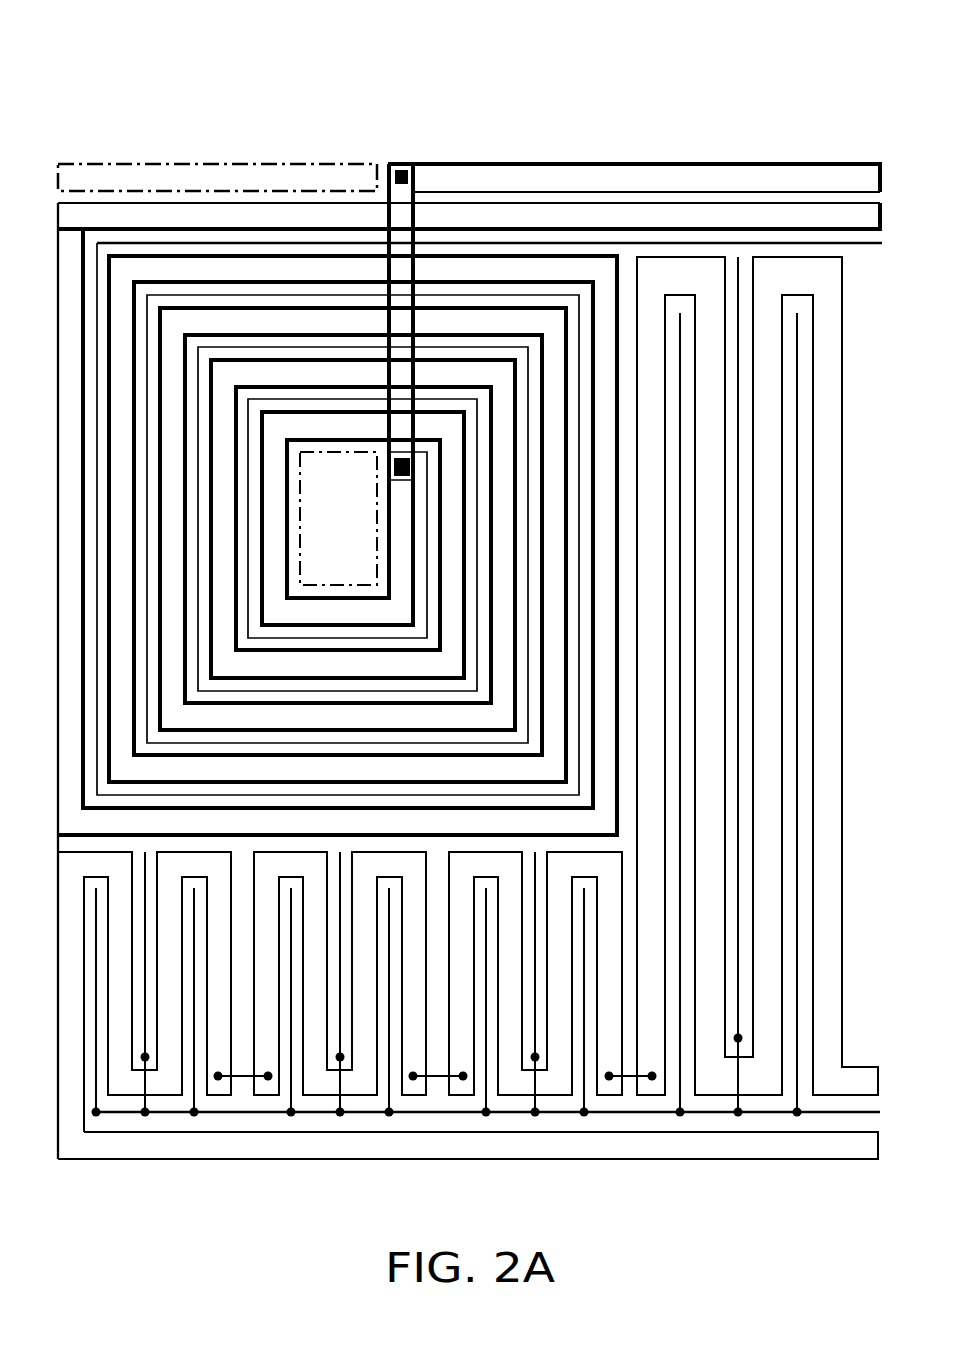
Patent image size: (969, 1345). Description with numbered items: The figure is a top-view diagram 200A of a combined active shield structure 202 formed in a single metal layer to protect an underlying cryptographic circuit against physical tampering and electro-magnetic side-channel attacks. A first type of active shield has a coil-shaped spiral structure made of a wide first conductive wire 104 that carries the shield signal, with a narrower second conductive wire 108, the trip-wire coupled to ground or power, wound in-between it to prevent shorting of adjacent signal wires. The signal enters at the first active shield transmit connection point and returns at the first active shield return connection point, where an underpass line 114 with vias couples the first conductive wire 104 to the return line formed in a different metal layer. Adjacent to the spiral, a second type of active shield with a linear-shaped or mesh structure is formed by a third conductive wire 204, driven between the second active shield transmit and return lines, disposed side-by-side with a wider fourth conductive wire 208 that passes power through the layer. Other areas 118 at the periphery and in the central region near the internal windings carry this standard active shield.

The top-view diagram 200A is at (82, 25).
The combined active shield structure 202 is at (697, 53).
The first conductive wire 104 is at (55, 346).
The second conductive wire 108 is at (95, 476).
The underpass line 114 is at (421, 213).
The other areas 118 is at (286, 154).
The third conductive wire 204 is at (851, 493).
The fourth conductive wire 208 is at (806, 606).